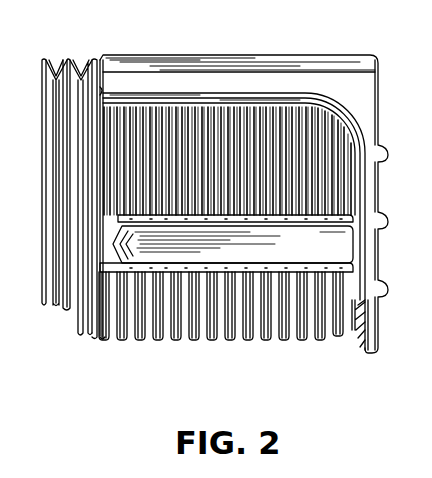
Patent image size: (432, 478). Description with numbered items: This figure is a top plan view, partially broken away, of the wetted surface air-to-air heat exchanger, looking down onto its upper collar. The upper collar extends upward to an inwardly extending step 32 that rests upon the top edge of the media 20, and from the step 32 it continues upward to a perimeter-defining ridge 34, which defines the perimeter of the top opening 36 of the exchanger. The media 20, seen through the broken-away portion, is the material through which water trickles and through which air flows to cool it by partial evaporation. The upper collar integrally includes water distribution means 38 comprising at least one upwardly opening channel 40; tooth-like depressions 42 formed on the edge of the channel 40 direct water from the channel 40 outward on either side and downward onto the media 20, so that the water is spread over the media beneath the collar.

The media 20 is at (70, 306).
The inwardly extending step 32 is at (364, 108).
The perimeter-defining ridge 34 is at (291, 100).
The top opening 36 is at (212, 133).
The water distribution means 38 is at (228, 280).
The upwardly opening channel 40 is at (318, 257).
The tooth-like depressions 42 is at (299, 266).